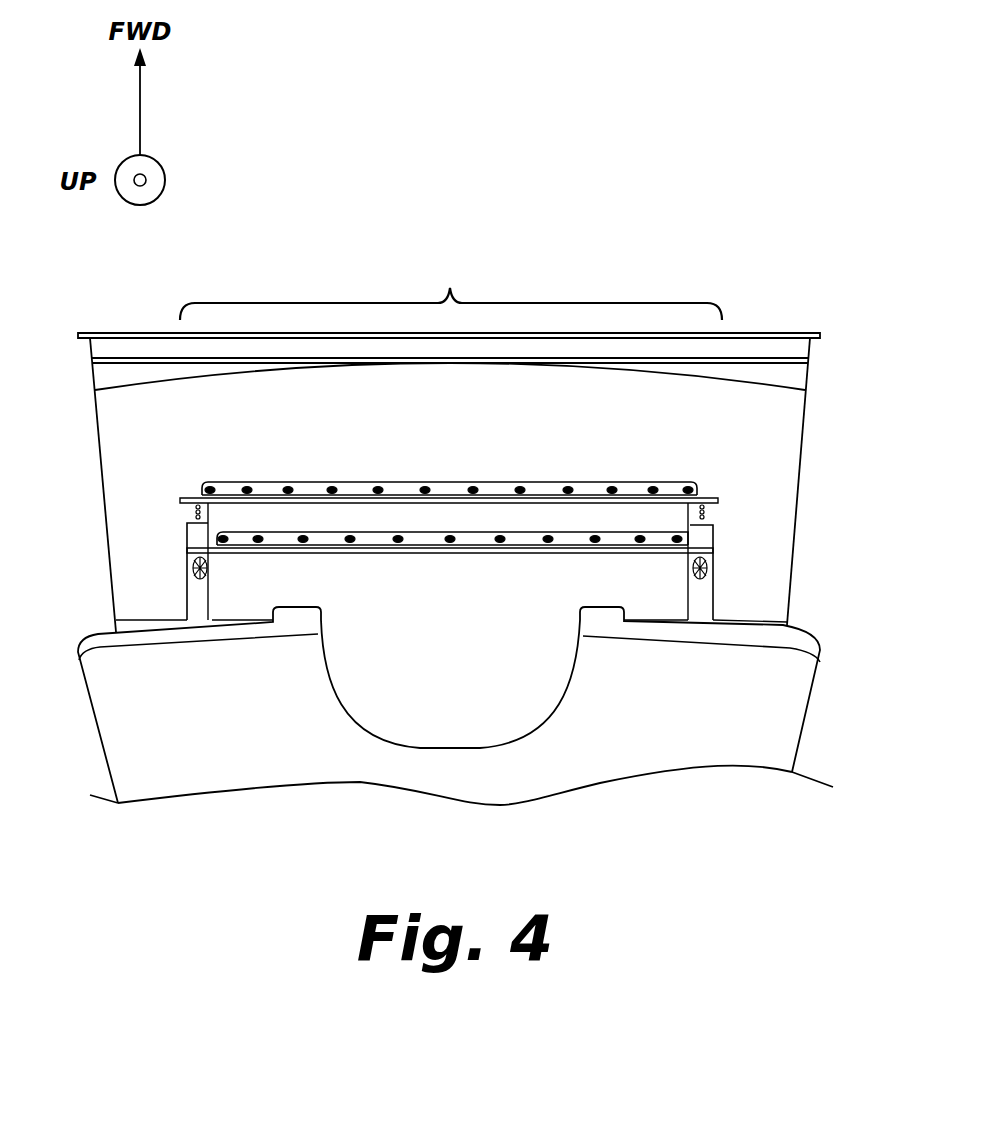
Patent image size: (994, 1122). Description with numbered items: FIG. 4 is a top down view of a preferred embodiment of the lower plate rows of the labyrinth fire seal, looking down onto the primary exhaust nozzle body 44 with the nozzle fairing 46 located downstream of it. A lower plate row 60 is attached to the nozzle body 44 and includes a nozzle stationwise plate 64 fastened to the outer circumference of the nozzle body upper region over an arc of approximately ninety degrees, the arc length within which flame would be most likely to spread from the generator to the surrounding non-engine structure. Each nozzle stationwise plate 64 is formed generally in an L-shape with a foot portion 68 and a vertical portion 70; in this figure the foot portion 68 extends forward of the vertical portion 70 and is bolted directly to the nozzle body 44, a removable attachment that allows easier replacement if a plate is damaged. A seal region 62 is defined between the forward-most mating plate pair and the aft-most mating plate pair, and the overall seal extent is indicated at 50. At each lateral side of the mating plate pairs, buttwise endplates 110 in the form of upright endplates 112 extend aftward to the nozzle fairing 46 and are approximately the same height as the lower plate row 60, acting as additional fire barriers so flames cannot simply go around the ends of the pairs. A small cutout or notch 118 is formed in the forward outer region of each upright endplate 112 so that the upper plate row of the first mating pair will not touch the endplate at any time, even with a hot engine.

The nozzle body 44 is at (783, 550).
The nozzle fairing 46 is at (795, 706).
The hinge assembly 50 is at (451, 285).
The lower plate row 60 is at (720, 483).
The seal region 62 is at (258, 518).
The nozzle stationwise plate 64 is at (402, 488).
The foot portion 68 is at (547, 488).
The vertical portion 70 is at (583, 503).
The endplates 110 is at (170, 597).
The upright endplates 112 is at (195, 592).
The cutout or notch 118 is at (190, 521).